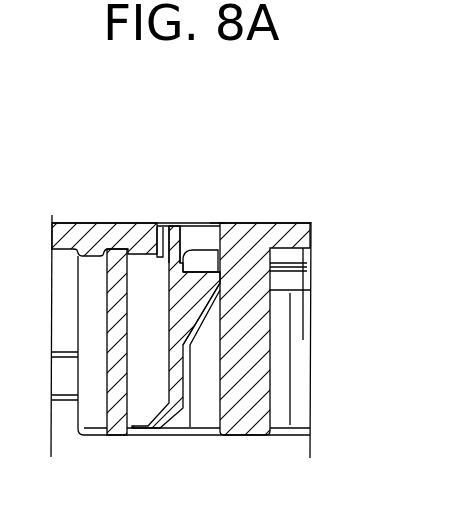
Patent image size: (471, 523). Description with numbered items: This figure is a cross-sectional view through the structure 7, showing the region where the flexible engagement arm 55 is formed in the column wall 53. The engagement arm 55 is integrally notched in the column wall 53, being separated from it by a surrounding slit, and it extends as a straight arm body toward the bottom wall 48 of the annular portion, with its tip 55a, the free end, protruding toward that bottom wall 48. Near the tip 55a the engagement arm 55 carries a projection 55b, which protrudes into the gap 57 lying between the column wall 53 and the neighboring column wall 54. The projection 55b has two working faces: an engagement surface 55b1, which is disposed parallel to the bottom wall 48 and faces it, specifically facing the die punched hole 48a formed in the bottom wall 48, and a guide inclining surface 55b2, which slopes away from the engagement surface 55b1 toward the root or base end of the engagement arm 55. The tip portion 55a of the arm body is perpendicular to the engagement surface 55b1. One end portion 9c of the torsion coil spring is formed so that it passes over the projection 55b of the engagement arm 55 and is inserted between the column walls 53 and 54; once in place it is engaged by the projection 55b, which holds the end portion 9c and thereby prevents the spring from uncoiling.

The assembly 7 is at (65, 199).
The bottom wall 48 is at (118, 222).
The die punched hole 48a is at (171, 222).
The column wall 53 is at (105, 403).
The one end portion of the torsion coil spring 9c is at (217, 222).
The flexible engagement arm 55 is at (178, 352).
The tip of the engagement arm 55a is at (172, 263).
The projection 55b is at (222, 278).
The engagement surface 55b1 is at (205, 257).
The guide inclining surface 55b2 is at (210, 308).
The gap 57 is at (270, 300).
The column wall 54 is at (272, 316).